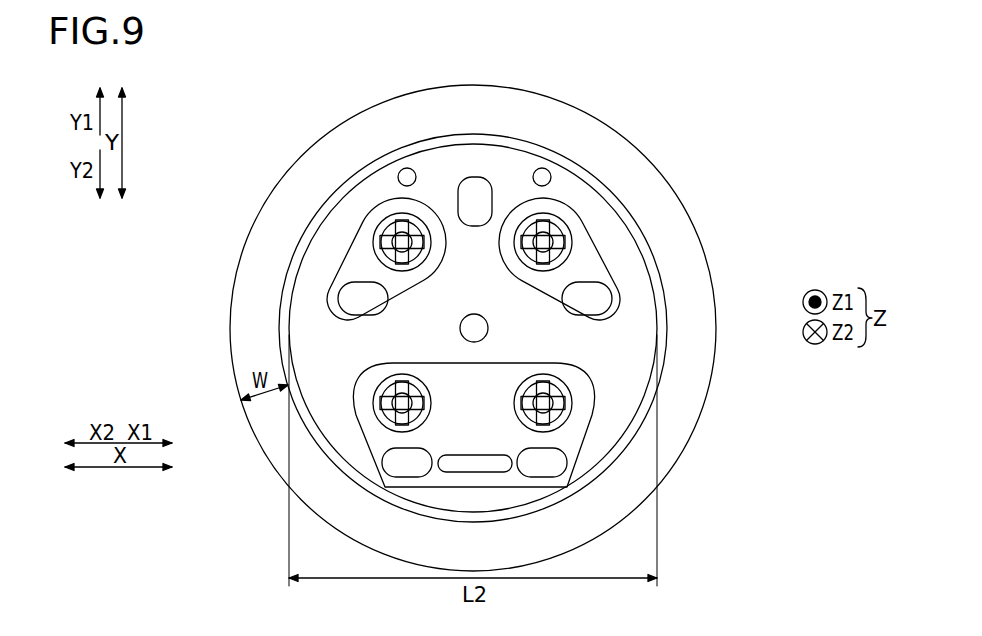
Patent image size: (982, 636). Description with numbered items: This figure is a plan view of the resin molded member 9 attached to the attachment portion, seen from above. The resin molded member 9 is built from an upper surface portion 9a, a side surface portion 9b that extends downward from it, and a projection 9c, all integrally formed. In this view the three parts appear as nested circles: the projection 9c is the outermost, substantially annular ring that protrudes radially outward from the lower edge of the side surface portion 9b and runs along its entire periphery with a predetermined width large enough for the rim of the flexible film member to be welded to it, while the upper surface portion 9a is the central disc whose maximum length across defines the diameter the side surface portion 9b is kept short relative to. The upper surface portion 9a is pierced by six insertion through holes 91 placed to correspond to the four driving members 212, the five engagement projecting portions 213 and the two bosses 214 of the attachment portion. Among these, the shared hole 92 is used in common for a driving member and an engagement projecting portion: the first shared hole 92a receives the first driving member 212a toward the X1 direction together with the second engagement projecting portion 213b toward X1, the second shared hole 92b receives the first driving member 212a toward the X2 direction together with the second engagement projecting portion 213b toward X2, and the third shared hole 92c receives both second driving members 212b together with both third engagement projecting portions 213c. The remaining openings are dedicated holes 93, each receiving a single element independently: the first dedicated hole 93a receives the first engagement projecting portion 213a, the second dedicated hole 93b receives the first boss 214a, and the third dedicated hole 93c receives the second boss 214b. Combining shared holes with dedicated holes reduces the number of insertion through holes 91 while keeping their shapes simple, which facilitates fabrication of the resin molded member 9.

The resin molded member 9 is at (474, 328).
The upper surface portion 9a is at (303, 283).
The side surface portion 9b is at (287, 310).
The projection 9c is at (245, 357).
The insertion through holes 91 is at (495, 359).
The shared hole 92 is at (495, 362).
The first shared hole 92a is at (620, 316).
The second shared hole 92b is at (347, 253).
The third shared hole 92c is at (583, 452).
The dedicated holes 93 is at (485, 137).
The first dedicated hole 93a is at (476, 177).
The second dedicated hole 93b is at (543, 172).
The third dedicated hole 93c is at (406, 172).
The driving members 212 is at (496, 277).
The first driving members 212a is at (419, 266).
The second driving members 212b is at (383, 389).
The engagement projecting portions 213 is at (532, 362).
The first engagement projecting portion 213a is at (474, 226).
The second engagement projecting portions 213b is at (388, 313).
The third engagement projecting portions 213c is at (405, 477).
The bosses 214 is at (485, 123).
The first boss 214a is at (607, 123).
The second boss 214b is at (353, 123).